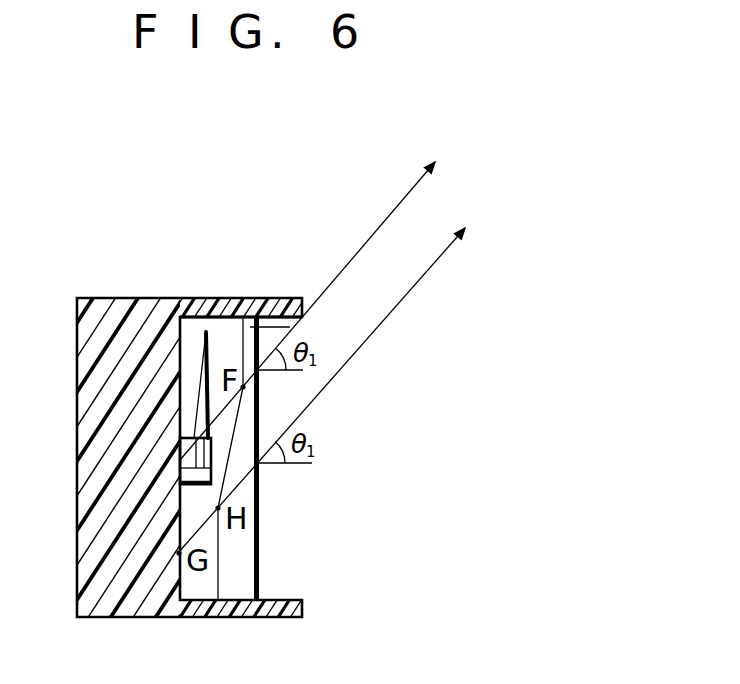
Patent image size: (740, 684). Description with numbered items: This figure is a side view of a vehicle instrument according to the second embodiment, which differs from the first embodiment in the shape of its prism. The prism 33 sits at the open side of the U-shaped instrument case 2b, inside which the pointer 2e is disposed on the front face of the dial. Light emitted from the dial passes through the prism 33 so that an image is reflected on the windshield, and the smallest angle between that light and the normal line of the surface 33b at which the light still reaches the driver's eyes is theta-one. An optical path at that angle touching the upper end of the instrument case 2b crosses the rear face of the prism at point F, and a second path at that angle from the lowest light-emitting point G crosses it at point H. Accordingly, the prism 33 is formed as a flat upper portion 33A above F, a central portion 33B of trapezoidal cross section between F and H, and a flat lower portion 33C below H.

The instrument case 2b is at (105, 298).
The pointer 2e is at (209, 355).
The prism 33 is at (290, 527).
The upper portion 33A is at (290, 327).
The central portion 33B is at (240, 424).
The surface of the prism 33b is at (258, 505).
The lower portion 33C is at (238, 573).